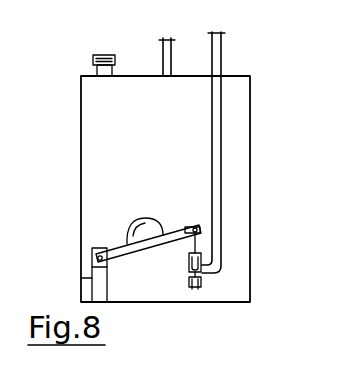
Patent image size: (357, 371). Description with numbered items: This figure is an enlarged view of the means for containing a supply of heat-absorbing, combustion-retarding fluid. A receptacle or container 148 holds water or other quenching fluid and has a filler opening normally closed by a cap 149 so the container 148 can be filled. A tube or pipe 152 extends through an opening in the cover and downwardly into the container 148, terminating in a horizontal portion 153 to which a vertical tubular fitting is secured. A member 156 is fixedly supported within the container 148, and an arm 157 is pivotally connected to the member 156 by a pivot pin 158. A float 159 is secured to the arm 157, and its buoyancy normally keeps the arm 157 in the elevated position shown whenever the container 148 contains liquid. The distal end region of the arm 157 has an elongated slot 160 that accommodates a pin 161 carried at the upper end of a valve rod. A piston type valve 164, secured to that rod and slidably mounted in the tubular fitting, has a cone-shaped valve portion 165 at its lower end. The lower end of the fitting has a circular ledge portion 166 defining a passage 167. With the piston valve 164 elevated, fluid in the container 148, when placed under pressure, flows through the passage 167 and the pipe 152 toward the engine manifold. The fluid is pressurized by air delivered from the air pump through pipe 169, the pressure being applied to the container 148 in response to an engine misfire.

The container 148 is at (81, 145).
The cap 149 is at (93, 56).
The pipe 152 is at (222, 193).
The horizontal portion 153 is at (202, 278).
The member 156 is at (81, 278).
The arm 157 is at (113, 247).
The pivot pin 158 is at (99, 249).
The float 159 is at (142, 218).
The elongated slot 160 is at (182, 227).
The pin 161 is at (197, 226).
The piston type valve 164 is at (189, 262).
The cone-shaped valve portion 165 is at (189, 273).
The circular ledge portion 166 is at (203, 287).
The passage 167 is at (196, 288).
The pipe 169 is at (163, 52).